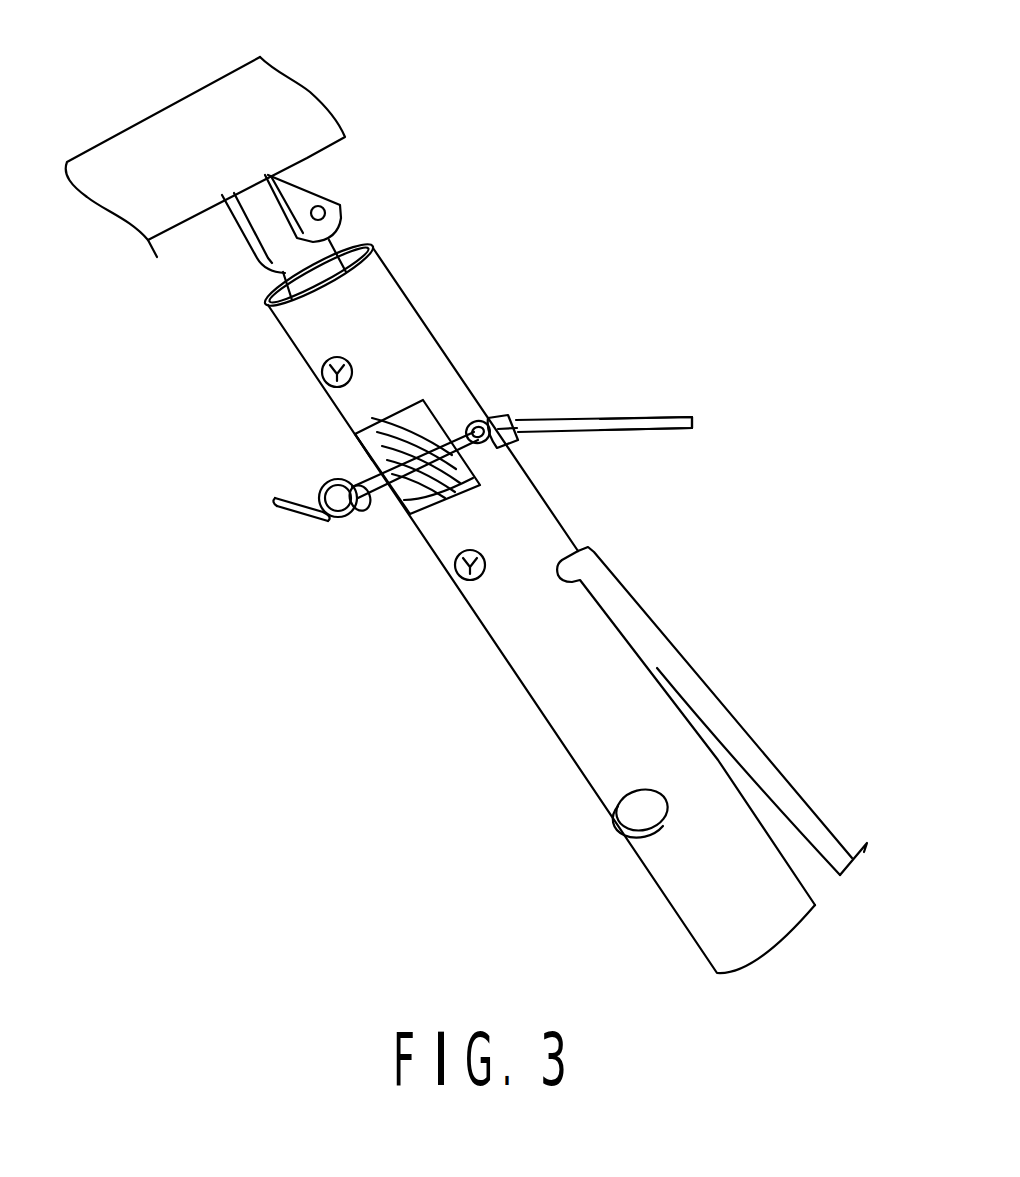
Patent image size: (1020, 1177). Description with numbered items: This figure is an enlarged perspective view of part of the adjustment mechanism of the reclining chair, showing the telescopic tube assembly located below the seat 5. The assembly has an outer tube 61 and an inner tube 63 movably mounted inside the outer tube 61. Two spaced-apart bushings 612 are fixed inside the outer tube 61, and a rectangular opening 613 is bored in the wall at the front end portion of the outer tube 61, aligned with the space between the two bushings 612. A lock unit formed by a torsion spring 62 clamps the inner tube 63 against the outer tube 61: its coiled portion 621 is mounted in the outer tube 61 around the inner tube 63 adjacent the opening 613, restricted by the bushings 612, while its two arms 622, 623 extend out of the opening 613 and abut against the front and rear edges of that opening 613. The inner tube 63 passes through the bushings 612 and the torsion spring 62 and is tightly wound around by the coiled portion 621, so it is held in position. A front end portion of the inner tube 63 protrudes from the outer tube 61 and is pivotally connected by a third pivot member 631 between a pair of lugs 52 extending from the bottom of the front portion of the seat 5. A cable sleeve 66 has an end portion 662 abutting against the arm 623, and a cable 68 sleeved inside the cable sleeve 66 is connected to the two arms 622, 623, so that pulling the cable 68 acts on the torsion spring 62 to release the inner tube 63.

The seat 5 is at (258, 118).
The lugs 52 is at (307, 178).
The third pivot member 631 is at (327, 213).
The outer tube 61 is at (377, 247).
The inner tube 63 is at (300, 272).
The bushings 612 is at (385, 425).
The rectangular opening 613 is at (363, 453).
The torsion spring 62 is at (438, 413).
The coiled portion 621 is at (488, 415).
The arm 622 is at (375, 480).
The arm 623 is at (488, 450).
The cable sleeve 66 is at (635, 423).
The end portion of the cable sleeve 662 is at (522, 420).
The cable 68 is at (383, 490).